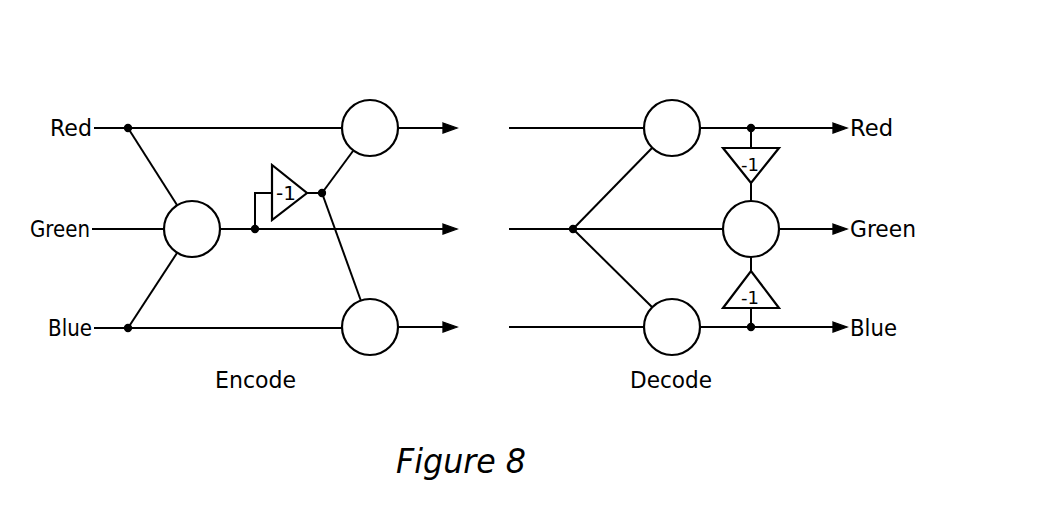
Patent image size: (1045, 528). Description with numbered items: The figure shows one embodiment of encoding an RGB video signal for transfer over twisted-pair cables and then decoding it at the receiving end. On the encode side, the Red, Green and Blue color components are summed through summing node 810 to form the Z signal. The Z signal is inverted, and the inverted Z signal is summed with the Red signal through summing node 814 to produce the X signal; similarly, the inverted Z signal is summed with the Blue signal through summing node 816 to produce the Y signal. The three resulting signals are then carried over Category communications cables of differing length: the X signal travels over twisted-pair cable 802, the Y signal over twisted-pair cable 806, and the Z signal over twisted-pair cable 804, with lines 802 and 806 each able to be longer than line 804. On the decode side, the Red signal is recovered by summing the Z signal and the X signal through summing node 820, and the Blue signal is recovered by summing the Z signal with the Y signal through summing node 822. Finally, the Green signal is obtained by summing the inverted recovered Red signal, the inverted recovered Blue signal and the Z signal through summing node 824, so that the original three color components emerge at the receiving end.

The twisted-pair cable 802 is at (422, 128).
The twisted-pair cable 804 is at (375, 229).
The twisted-pair cable 806 is at (413, 327).
The summing node 810 is at (181, 202).
The summing node 814 is at (372, 100).
The summing node 816 is at (350, 307).
The summing node 820 is at (683, 102).
The summing node 822 is at (663, 300).
The summing node 824 is at (772, 205).